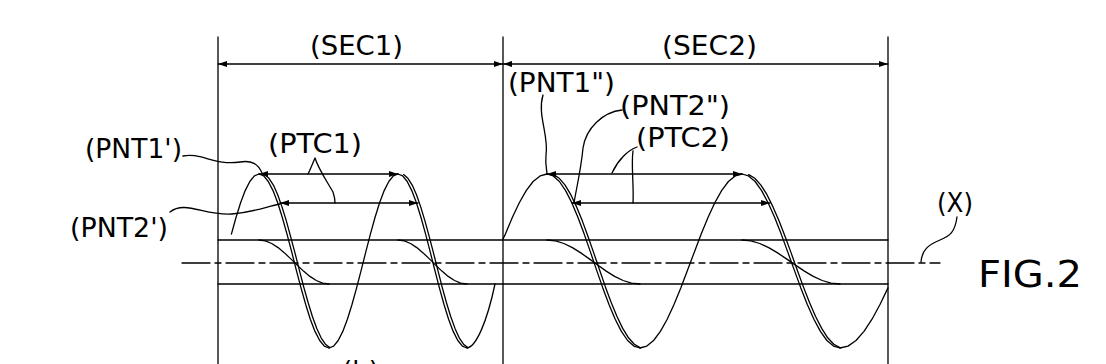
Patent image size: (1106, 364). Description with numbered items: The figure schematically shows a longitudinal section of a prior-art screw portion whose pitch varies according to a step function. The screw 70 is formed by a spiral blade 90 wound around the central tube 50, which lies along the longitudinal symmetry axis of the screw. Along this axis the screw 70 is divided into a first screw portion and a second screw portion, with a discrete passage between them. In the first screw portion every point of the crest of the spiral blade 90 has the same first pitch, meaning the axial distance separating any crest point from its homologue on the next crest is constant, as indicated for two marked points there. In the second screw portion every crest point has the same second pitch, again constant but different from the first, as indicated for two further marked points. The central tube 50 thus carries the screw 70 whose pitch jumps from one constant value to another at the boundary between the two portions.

The central tube 50 is at (828, 248).
The screw 70 is at (779, 204).
The spiral blade 90 is at (755, 180).